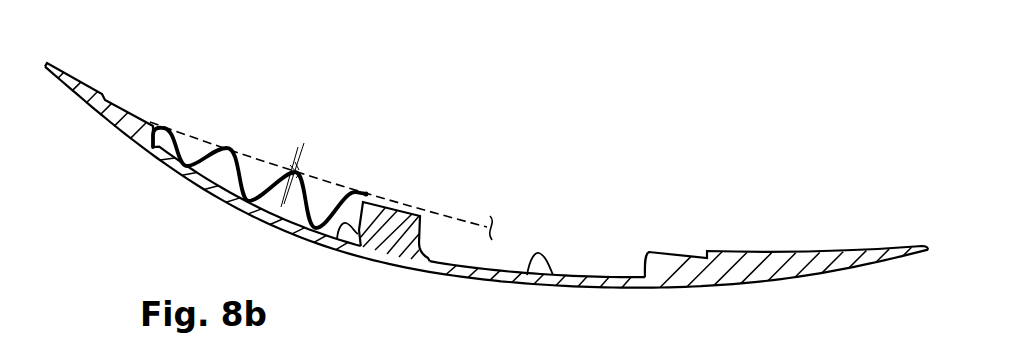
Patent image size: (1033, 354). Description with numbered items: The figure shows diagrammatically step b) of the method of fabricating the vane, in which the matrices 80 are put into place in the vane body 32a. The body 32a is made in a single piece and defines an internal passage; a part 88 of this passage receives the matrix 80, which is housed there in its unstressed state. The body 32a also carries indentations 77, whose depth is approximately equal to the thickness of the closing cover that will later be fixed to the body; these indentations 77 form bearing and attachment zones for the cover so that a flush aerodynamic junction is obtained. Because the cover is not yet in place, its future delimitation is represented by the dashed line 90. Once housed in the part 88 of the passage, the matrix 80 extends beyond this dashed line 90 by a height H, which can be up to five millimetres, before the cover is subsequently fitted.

The indentations 77 is at (130, 113).
The matrix 80 is at (229, 146).
The vane body 32a is at (97, 120).
The height H is at (300, 174).
The dashed line 90 is at (463, 221).
The part of the internal passage 88 is at (346, 228).